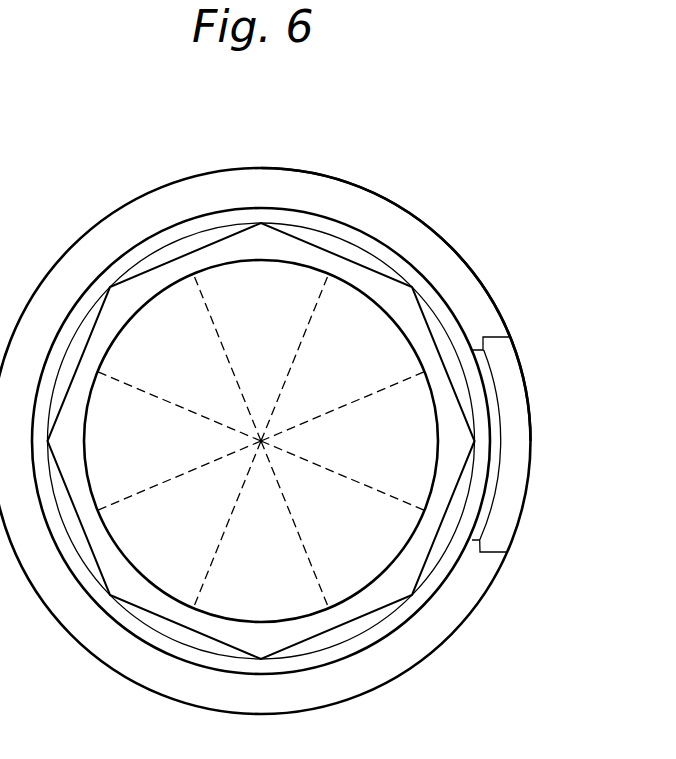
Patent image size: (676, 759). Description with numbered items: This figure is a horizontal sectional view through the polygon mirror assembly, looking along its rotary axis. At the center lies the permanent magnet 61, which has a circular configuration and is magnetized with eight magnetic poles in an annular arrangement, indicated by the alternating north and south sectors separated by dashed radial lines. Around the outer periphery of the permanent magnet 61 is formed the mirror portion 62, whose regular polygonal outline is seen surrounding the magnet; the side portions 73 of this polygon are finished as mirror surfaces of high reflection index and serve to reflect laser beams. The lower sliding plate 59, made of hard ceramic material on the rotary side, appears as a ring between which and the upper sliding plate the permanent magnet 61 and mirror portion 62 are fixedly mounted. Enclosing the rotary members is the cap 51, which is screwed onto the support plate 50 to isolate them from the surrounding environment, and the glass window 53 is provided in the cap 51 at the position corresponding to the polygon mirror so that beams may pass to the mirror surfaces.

The support plate 50 is at (412, 276).
The cap 51 is at (462, 268).
The lower sliding plate 59 is at (360, 256).
The mirror portion 62 is at (269, 241).
The side portions 73 is at (443, 363).
The permanent magnet 61 is at (402, 346).
The glass window 53 is at (516, 390).